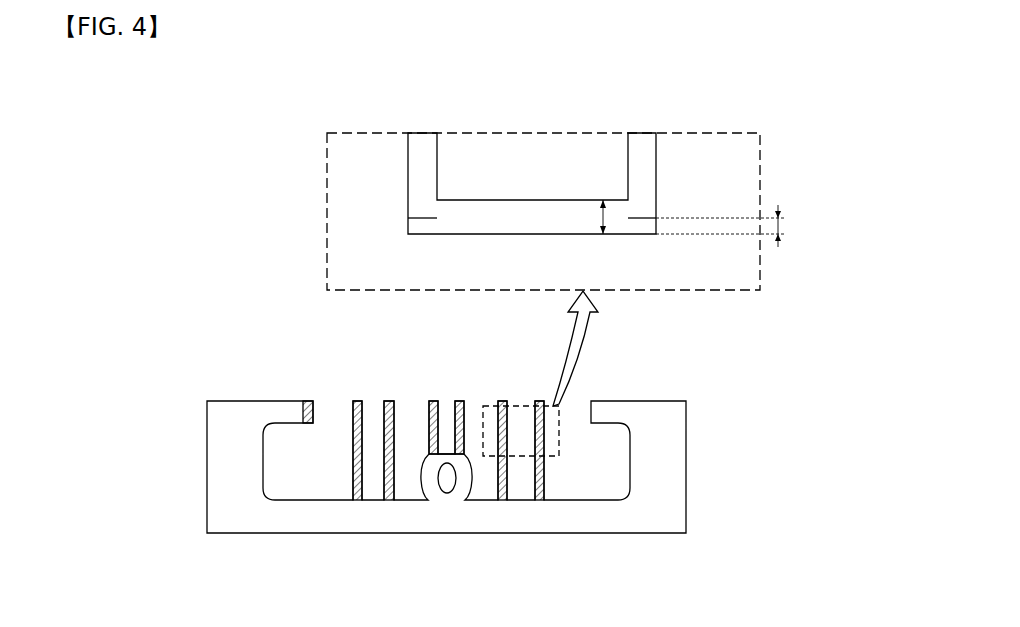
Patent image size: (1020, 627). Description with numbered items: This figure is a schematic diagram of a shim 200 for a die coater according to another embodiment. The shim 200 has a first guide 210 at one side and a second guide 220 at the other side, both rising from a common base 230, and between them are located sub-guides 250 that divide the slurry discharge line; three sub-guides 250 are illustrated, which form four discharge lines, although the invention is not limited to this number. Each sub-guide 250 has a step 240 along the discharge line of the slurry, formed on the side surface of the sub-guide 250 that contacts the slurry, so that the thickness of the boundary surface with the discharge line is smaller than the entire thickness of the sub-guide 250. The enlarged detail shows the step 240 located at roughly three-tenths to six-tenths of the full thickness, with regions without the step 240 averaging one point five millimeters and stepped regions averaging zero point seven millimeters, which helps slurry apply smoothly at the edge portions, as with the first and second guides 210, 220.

The shim for die coater 200 is at (184, 127).
The first guide 210 is at (227, 405).
The second guide 220 is at (612, 405).
The base 230 is at (273, 534).
The step 240 is at (640, 200).
The sub-guide 250 is at (441, 405).